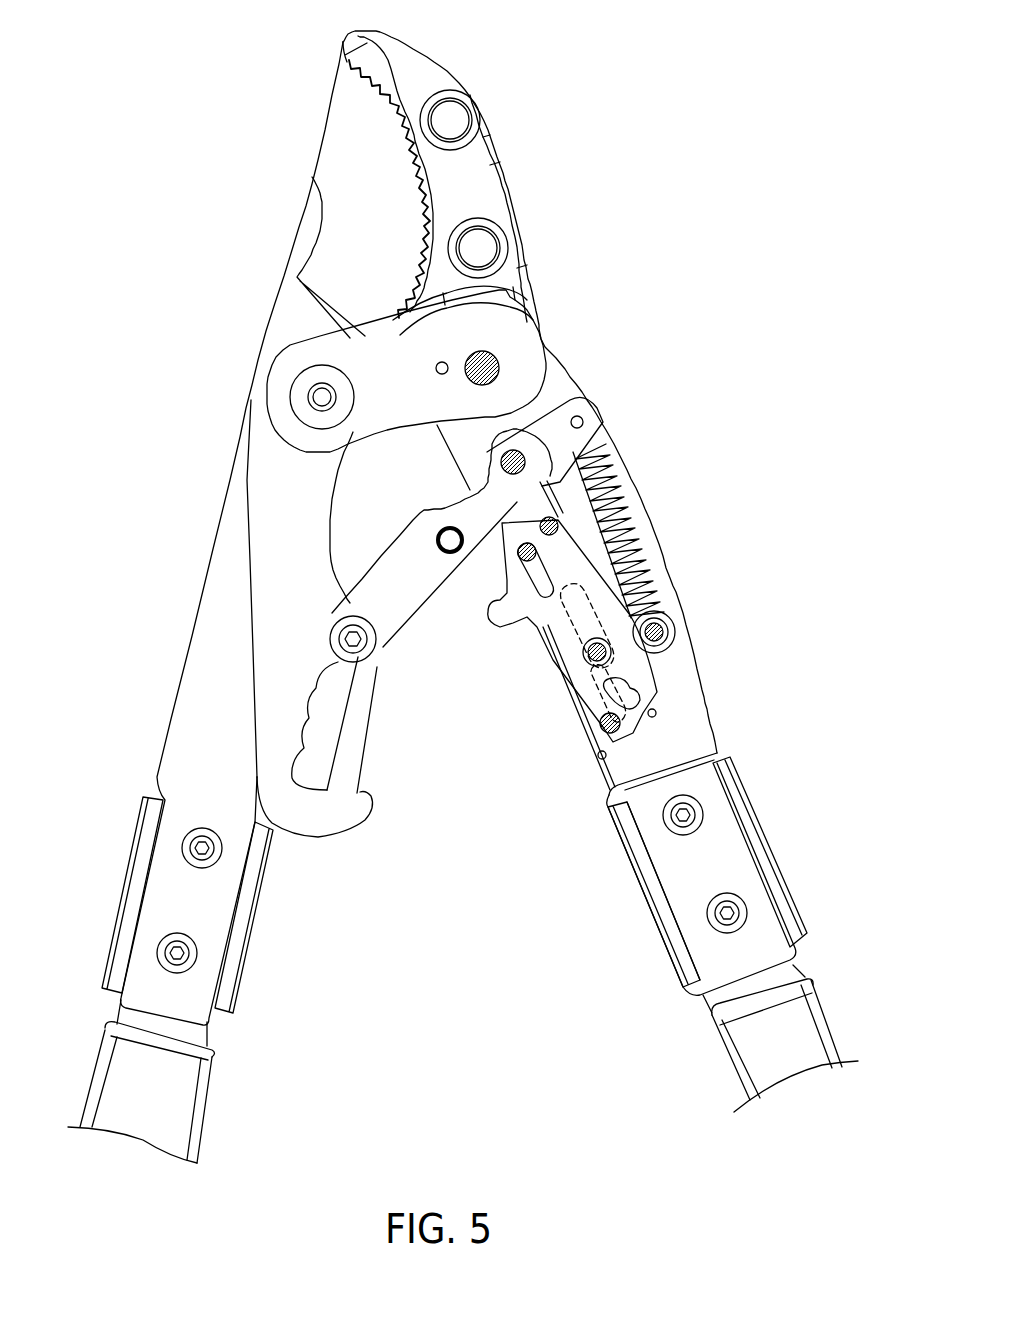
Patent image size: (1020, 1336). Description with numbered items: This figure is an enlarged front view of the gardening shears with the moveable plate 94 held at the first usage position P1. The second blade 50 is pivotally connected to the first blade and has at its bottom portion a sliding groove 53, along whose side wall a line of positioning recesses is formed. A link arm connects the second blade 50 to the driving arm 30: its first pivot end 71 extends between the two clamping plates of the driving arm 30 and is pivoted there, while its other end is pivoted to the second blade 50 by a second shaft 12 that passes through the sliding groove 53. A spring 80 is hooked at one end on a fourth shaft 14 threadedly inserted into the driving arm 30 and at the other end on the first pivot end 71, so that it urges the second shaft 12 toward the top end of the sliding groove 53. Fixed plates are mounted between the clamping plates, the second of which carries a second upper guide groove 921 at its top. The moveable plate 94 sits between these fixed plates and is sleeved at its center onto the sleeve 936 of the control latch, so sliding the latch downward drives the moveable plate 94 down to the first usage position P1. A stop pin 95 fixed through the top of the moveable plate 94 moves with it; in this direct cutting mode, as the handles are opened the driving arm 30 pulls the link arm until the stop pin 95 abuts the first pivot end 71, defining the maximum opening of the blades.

The driving arm 30 is at (740, 720).
The second blade 50 is at (341, 864).
The sliding groove 53 is at (332, 717).
The second shaft 12 is at (375, 642).
The first pivot end 71 is at (551, 430).
The second upper guide groove 921 is at (552, 500).
The stop pin 95 is at (578, 470).
The spring 80 is at (556, 519).
The moveable plate 94 is at (572, 578).
The fourth shaft 14 is at (656, 625).
The sleeve 936 is at (608, 656).
The first usage position P1 is at (516, 656).